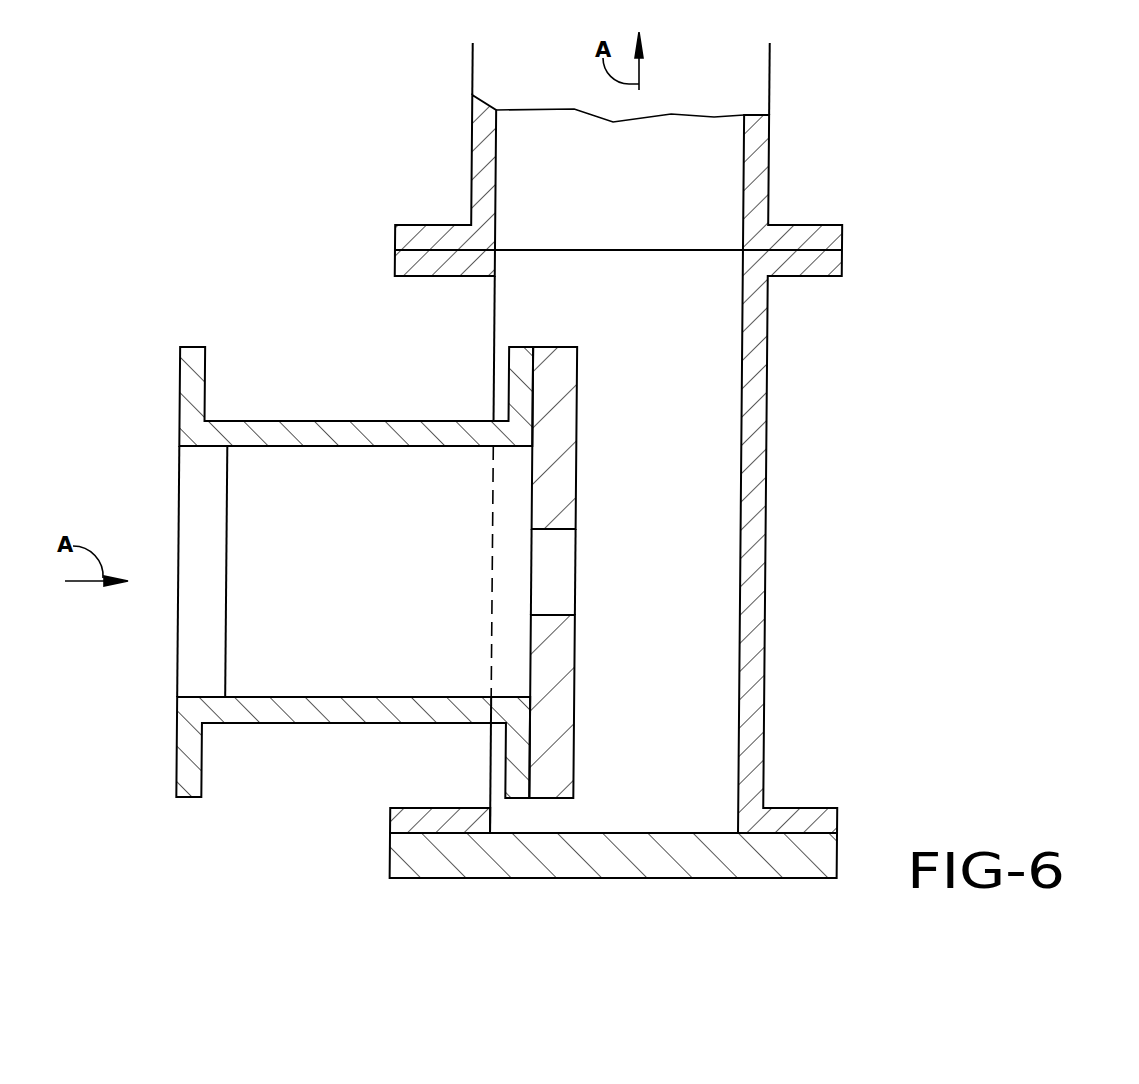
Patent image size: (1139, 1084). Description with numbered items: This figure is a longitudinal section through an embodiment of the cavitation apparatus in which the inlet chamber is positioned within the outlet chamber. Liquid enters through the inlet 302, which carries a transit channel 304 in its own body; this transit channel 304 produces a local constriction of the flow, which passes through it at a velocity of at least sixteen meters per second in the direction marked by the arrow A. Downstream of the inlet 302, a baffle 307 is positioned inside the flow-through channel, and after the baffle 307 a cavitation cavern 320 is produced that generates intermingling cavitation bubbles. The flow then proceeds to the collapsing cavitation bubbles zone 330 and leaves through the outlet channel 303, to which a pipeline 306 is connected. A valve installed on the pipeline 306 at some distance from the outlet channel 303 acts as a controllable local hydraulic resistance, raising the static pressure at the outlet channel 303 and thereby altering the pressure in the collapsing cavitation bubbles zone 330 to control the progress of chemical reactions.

The inlet 302 is at (197, 498).
The outlet channel 303 is at (532, 248).
The transit channel 304 is at (550, 582).
The pipeline 306 is at (480, 162).
The baffle 307 is at (552, 410).
The cavitation cavern 320 is at (693, 737).
The collapsing cavitation bubbles zone 330 is at (703, 197).